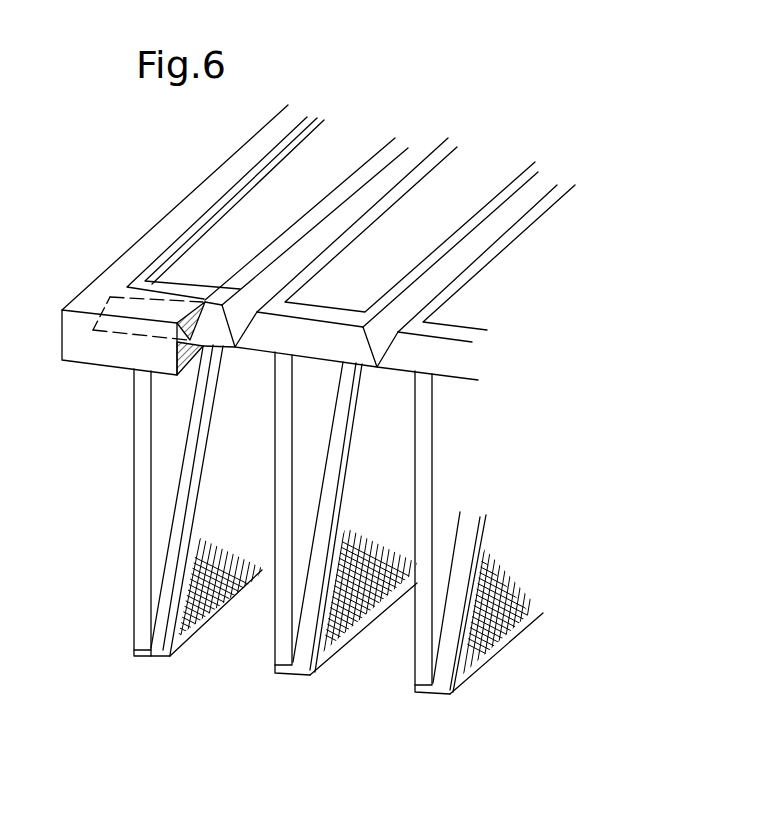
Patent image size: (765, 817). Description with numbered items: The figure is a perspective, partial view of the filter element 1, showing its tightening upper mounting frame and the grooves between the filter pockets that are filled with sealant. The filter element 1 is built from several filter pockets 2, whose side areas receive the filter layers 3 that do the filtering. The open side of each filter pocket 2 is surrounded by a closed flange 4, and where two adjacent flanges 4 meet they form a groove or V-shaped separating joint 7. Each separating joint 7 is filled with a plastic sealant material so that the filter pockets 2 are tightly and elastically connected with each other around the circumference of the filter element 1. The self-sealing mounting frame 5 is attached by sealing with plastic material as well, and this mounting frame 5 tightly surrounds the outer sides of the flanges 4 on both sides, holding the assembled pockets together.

The filter element 1 is at (326, 86).
The filter pocket 2 is at (163, 640).
The filter layer 3 is at (215, 610).
The flange 4 is at (214, 318).
The mounting frame 5 is at (72, 330).
The separating joint 7 is at (410, 155).